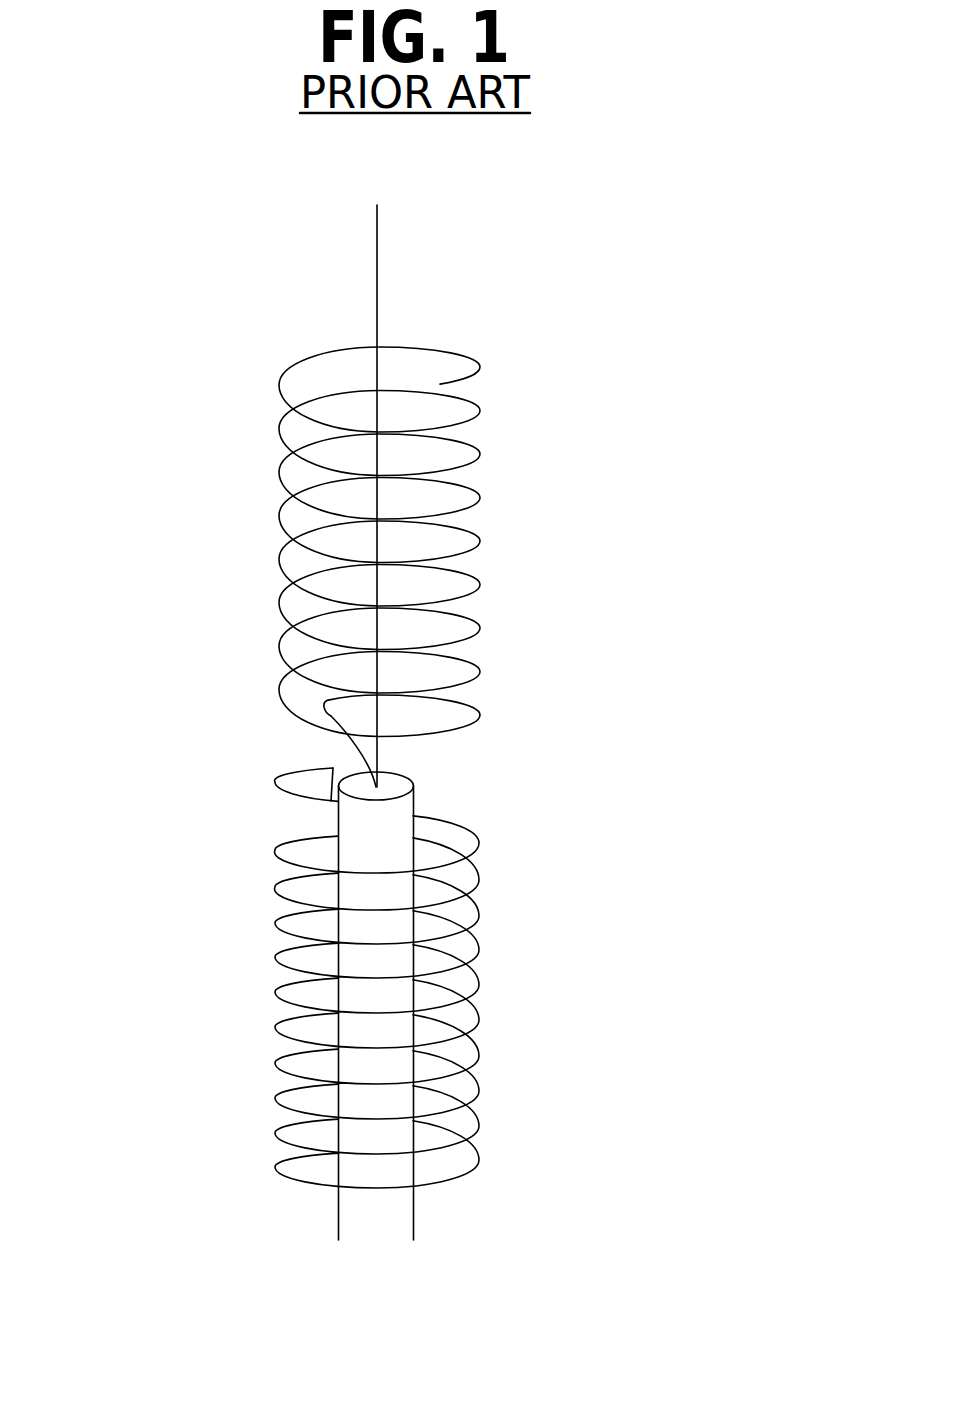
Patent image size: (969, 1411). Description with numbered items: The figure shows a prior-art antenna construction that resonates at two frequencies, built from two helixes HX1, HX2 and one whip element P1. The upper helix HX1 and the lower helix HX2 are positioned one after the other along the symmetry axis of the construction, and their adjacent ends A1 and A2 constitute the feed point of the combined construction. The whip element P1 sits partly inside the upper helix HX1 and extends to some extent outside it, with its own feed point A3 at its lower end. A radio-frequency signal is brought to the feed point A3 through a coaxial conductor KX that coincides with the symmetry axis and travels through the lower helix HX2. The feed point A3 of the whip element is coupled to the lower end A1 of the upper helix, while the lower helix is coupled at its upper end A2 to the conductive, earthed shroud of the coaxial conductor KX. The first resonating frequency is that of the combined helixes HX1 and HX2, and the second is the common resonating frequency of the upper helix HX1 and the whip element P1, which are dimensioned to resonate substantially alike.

The whip element P1 is at (378, 292).
The upper helix HX1 is at (480, 450).
The lower helix HX2 is at (479, 983).
The coaxial conductor KX is at (357, 1024).
The lower end of upper helix A1 is at (343, 729).
The upper end of lower helix A2 is at (328, 790).
The feed point of whip element A3 is at (393, 775).